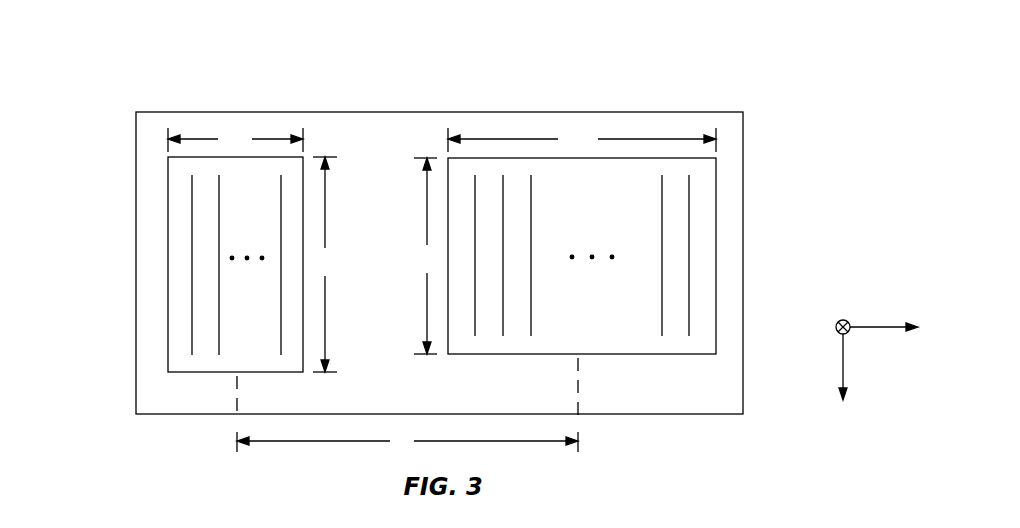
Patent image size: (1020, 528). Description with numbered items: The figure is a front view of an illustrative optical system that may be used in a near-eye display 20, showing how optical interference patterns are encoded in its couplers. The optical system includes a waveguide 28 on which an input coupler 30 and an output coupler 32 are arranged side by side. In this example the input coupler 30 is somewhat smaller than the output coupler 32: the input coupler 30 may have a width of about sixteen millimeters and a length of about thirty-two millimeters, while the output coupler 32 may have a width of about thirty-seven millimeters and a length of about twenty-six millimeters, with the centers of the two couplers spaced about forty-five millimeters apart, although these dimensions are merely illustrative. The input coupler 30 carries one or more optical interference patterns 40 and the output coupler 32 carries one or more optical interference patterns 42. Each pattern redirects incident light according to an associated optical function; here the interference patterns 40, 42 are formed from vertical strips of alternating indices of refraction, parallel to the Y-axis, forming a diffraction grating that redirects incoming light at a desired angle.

The near-eye display 20 is at (659, 77).
The waveguide 28 is at (730, 380).
The input coupler 30 is at (197, 264).
The output coupler 32 is at (620, 256).
The optical interference patterns 40 is at (281, 199).
The optical interference patterns 42 is at (660, 300).